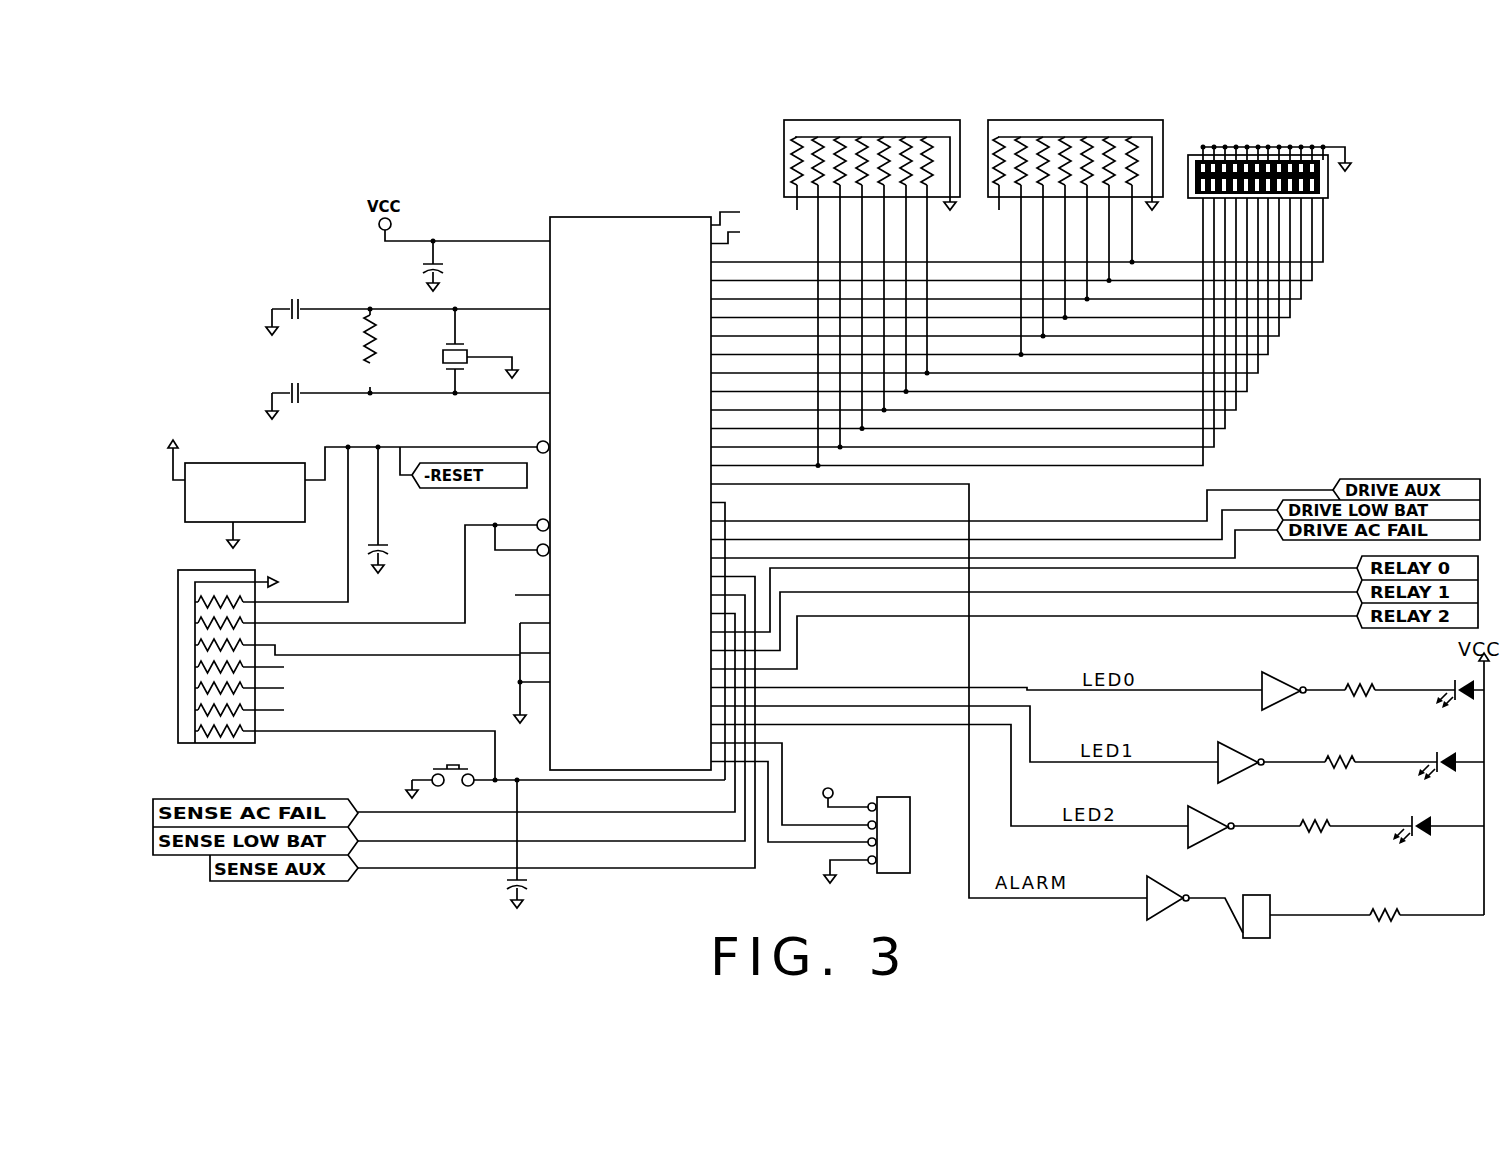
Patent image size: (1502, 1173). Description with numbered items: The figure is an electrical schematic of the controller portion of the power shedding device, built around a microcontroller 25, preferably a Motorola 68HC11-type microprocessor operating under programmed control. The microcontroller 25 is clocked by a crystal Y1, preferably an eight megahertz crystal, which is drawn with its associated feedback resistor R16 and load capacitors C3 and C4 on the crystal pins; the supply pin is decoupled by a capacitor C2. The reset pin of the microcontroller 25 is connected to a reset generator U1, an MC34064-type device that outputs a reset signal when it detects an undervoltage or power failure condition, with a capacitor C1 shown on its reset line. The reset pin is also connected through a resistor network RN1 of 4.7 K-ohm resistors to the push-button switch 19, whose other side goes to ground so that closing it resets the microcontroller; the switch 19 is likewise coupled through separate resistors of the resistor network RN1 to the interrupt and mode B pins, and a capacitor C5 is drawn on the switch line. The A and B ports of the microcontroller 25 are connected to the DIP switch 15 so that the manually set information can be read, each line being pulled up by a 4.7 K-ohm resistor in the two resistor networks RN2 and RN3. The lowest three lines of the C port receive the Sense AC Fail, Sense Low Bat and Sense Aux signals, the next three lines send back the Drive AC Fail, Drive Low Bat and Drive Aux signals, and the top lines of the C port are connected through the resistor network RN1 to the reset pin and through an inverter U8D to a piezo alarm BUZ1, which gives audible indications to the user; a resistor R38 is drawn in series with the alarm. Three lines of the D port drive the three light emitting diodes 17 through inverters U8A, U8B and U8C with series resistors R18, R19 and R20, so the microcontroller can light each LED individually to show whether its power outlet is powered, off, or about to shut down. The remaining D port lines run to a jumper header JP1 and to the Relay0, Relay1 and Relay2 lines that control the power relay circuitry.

The microcontroller 25 is at (640, 217).
The DIP switch 15 is at (1190, 155).
The light emitting diodes 17 is at (1454, 679).
The push-button switch 19 is at (432, 768).
The reset generator U1 is at (228, 463).
The resistor network RN1 is at (188, 570).
The resistor network RN2 is at (784, 135).
The resistor network RN3 is at (1040, 120).
The capacitor C1 is at (393, 538).
The capacitor C2 is at (440, 262).
The capacitor C3 is at (299, 298).
The capacitor C4 is at (300, 386).
The capacitor C5 is at (530, 880).
The resistor R16 is at (368, 340).
The resistor R18 is at (1360, 697).
The resistor R19 is at (1340, 770).
The resistor R20 is at (1312, 831).
The resistor R38 is at (1380, 921).
The crystal Y1 is at (442, 354).
The inverter U8A is at (1300, 658).
The inverter U8B is at (1236, 742).
The inverter U8C is at (1211, 808).
The inverter U8D is at (1165, 915).
The jumper header JP1 is at (890, 797).
The piezo alarm BUZ1 is at (1280, 895).